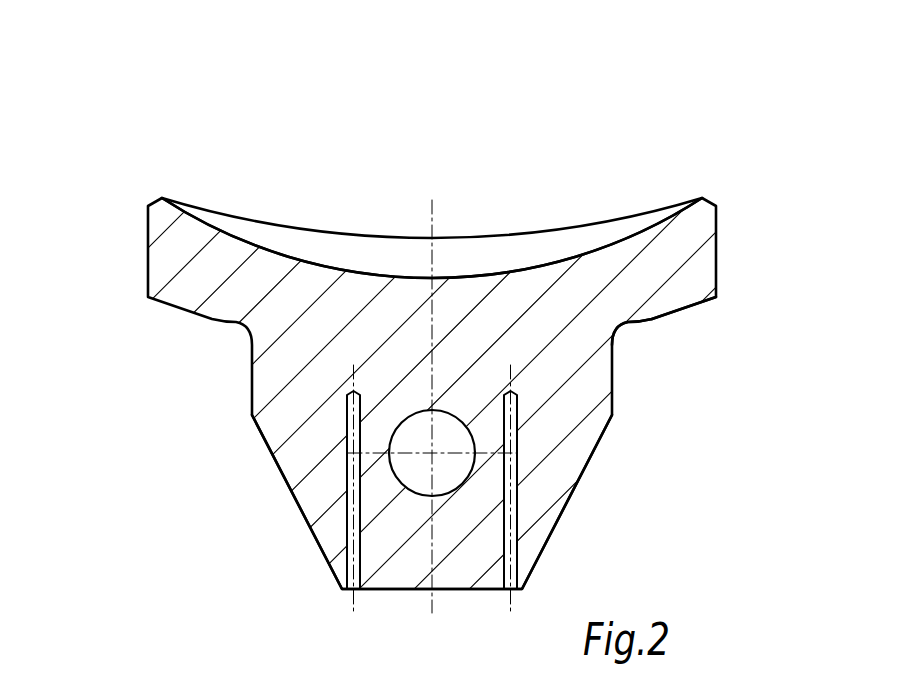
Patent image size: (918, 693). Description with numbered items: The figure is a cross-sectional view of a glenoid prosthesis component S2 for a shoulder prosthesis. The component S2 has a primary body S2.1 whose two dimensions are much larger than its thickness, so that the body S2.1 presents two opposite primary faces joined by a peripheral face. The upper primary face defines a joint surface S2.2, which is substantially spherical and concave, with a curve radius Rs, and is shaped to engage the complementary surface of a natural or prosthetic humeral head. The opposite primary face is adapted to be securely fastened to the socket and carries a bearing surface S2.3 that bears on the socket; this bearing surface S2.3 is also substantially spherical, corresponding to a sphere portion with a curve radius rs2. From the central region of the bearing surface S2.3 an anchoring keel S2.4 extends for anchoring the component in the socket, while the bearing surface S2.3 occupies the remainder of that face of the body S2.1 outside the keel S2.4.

The glenoid prosthesis component S2 is at (459, 334).
The primary body S2.1 is at (690, 271).
The joint surface S2.2 is at (606, 232).
The bearing surface S2.3 is at (708, 316).
The anchoring keel S2.4 is at (387, 543).
The curve radius of the joint surface Rs is at (536, 235).
The curve radius of the bearing surface rs2 is at (683, 347).